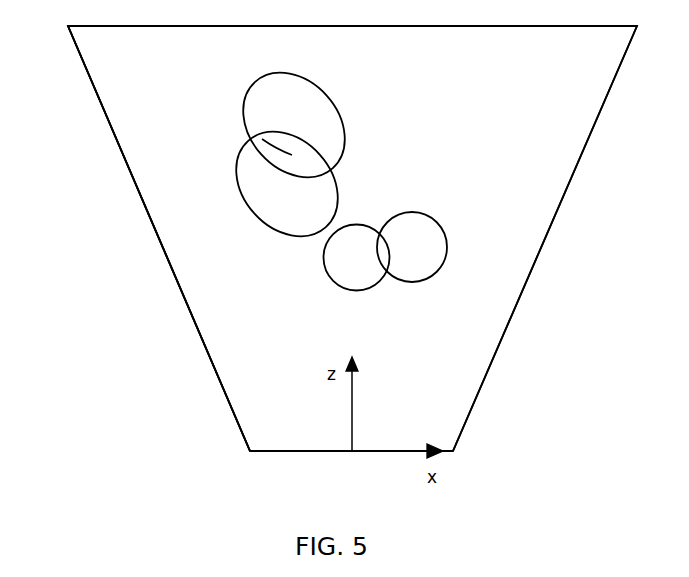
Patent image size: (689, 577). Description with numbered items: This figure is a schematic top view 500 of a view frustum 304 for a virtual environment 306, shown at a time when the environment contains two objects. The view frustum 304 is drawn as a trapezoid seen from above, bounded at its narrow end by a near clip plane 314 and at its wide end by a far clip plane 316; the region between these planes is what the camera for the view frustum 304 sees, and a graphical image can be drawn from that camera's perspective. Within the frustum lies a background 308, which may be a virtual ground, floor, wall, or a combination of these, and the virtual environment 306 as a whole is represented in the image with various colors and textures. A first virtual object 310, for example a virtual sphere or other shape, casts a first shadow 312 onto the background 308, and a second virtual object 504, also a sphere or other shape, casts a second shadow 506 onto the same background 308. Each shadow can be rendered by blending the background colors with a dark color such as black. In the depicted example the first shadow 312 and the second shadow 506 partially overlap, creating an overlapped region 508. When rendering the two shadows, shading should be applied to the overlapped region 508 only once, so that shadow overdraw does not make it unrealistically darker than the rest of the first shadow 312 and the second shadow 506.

The top view 500 is at (572, 277).
The view frustum 304 is at (181, 289).
The virtual environment 306 is at (144, 238).
The background 308 is at (545, 238).
The first virtual object 310 is at (336, 283).
The first shadow 312 is at (254, 203).
The near clip plane 314 is at (297, 451).
The far clip plane 316 is at (192, 26).
The second virtual object 504 is at (444, 231).
The second shadow 506 is at (333, 112).
The overlapped region 508 is at (278, 148).